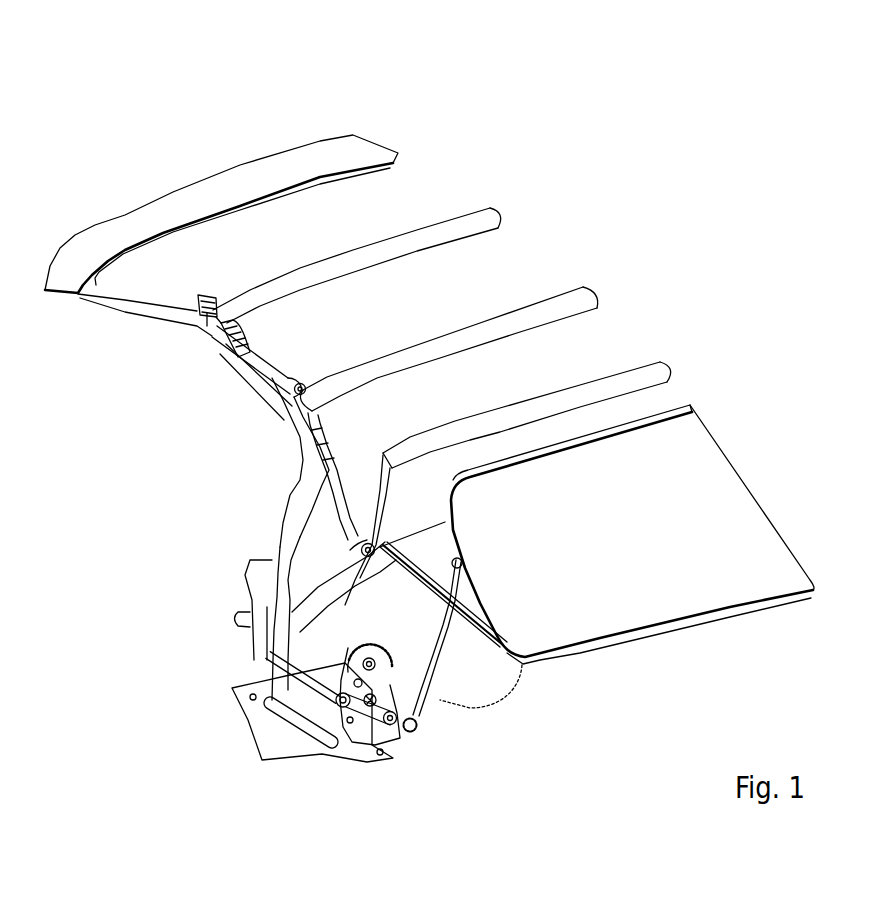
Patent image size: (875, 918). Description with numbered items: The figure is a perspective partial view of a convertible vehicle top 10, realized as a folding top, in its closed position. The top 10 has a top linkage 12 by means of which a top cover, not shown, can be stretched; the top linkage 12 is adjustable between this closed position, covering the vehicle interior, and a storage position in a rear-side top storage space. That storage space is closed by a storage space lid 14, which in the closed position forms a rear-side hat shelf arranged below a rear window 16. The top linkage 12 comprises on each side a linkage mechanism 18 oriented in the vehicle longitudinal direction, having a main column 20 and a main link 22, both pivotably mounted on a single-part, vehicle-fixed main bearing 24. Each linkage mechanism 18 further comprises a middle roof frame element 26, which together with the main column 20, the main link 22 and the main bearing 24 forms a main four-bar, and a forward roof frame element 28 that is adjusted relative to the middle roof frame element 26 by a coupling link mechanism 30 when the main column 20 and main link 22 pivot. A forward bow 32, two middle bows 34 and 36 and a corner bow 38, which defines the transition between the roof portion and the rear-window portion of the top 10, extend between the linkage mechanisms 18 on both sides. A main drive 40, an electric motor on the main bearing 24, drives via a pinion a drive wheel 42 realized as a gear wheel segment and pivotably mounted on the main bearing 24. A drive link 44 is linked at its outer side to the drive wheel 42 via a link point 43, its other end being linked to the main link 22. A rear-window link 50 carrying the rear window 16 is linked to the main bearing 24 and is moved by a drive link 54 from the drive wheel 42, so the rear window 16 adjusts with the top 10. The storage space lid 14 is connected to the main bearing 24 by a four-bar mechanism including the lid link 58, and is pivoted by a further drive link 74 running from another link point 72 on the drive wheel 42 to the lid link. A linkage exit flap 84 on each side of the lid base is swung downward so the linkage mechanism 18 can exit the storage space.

The convertible vehicle top 10 is at (775, 138).
The top linkage 12 is at (288, 498).
The storage space lid 14 is at (420, 543).
The rear window 16 is at (722, 473).
The linkage mechanism 18 is at (265, 409).
The main column 20 is at (280, 538).
The main link 22 is at (335, 458).
The main bearing 24 is at (265, 708).
The middle roof frame element 26 is at (240, 367).
The forward roof frame element 28 is at (125, 300).
The coupling link mechanism 30 is at (290, 378).
The forward bow 32 is at (155, 215).
The middle bow 34 is at (498, 218).
The middle bow 36 is at (590, 297).
The corner bow 38 is at (653, 373).
The main drive 40 is at (418, 727).
The drive wheel 42 is at (377, 678).
The link point 43 is at (344, 707).
The drive link 44 is at (300, 620).
The rear-window link 50 is at (440, 656).
The drive link 54 is at (393, 722).
The lid link 58 is at (337, 623).
The link point 72 is at (380, 655).
The drive link 74 is at (243, 623).
The linkage exit flap 84 is at (382, 612).